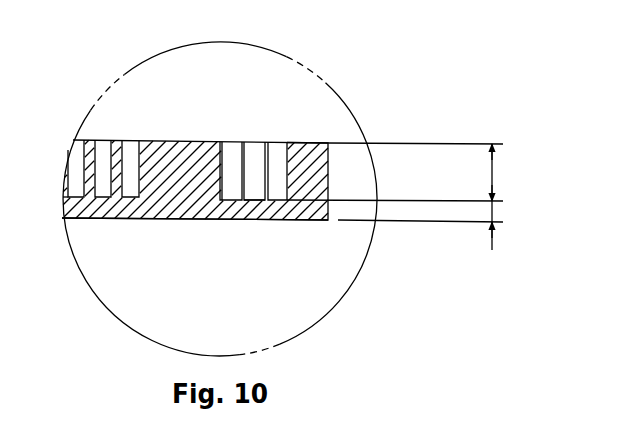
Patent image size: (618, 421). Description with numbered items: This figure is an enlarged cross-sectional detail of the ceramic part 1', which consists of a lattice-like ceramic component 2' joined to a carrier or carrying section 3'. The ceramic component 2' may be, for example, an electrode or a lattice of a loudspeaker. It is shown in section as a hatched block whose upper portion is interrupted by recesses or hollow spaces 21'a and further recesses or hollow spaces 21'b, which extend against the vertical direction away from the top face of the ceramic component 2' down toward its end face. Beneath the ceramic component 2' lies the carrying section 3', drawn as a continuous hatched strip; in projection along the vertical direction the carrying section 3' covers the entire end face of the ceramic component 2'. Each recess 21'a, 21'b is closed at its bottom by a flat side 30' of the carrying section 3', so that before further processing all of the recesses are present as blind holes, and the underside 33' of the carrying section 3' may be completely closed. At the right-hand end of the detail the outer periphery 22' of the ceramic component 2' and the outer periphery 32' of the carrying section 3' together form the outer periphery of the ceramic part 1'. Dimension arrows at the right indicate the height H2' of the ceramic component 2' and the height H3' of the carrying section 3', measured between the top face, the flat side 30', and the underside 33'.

The ceramic part 1' is at (195, 118).
The ceramic component 2' is at (195, 147).
The recesses or hollow spaces 21'a is at (86, 139).
The further recesses or hollow spaces 21'b is at (276, 146).
The flat side 30' is at (290, 158).
The outer periphery of the ceramic component 22' is at (395, 140).
The outer periphery of the carrying section 32' is at (395, 224).
The carrying section 3' is at (195, 232).
The underside of the carrying section 33' is at (282, 250).
The height of upper portion H2' is at (537, 172).
The height of lower layer H3' is at (537, 225).